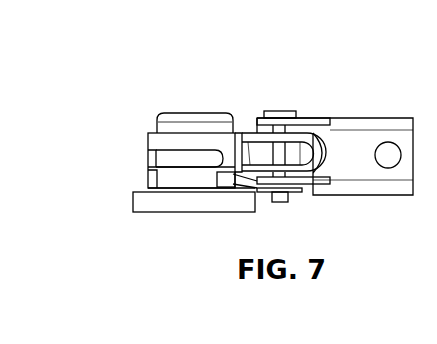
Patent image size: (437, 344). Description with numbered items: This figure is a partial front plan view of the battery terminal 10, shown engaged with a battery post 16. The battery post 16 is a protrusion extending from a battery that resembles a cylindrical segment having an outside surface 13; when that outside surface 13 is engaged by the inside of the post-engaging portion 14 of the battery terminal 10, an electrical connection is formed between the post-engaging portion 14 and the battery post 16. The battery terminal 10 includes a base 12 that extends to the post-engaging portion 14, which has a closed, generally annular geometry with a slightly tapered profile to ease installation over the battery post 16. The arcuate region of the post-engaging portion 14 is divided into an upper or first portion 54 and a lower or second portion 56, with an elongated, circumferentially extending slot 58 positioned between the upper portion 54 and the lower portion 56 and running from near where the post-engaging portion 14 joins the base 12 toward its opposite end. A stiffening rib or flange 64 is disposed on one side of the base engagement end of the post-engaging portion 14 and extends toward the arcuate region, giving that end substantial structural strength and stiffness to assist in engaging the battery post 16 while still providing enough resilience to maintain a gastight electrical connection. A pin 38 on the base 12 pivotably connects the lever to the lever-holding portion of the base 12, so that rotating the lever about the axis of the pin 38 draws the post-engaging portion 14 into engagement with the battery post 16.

The battery terminal 10 is at (322, 77).
The base 12 is at (352, 118).
The outside surface 13 is at (235, 128).
The post-engaging portion 14 is at (141, 175).
The battery post 16 is at (190, 113).
The pin 38 is at (288, 200).
The upper portion 54 is at (150, 143).
The lower portion 56 is at (137, 192).
The circumferentially extending slot 58 is at (198, 158).
The flange 64 is at (233, 190).